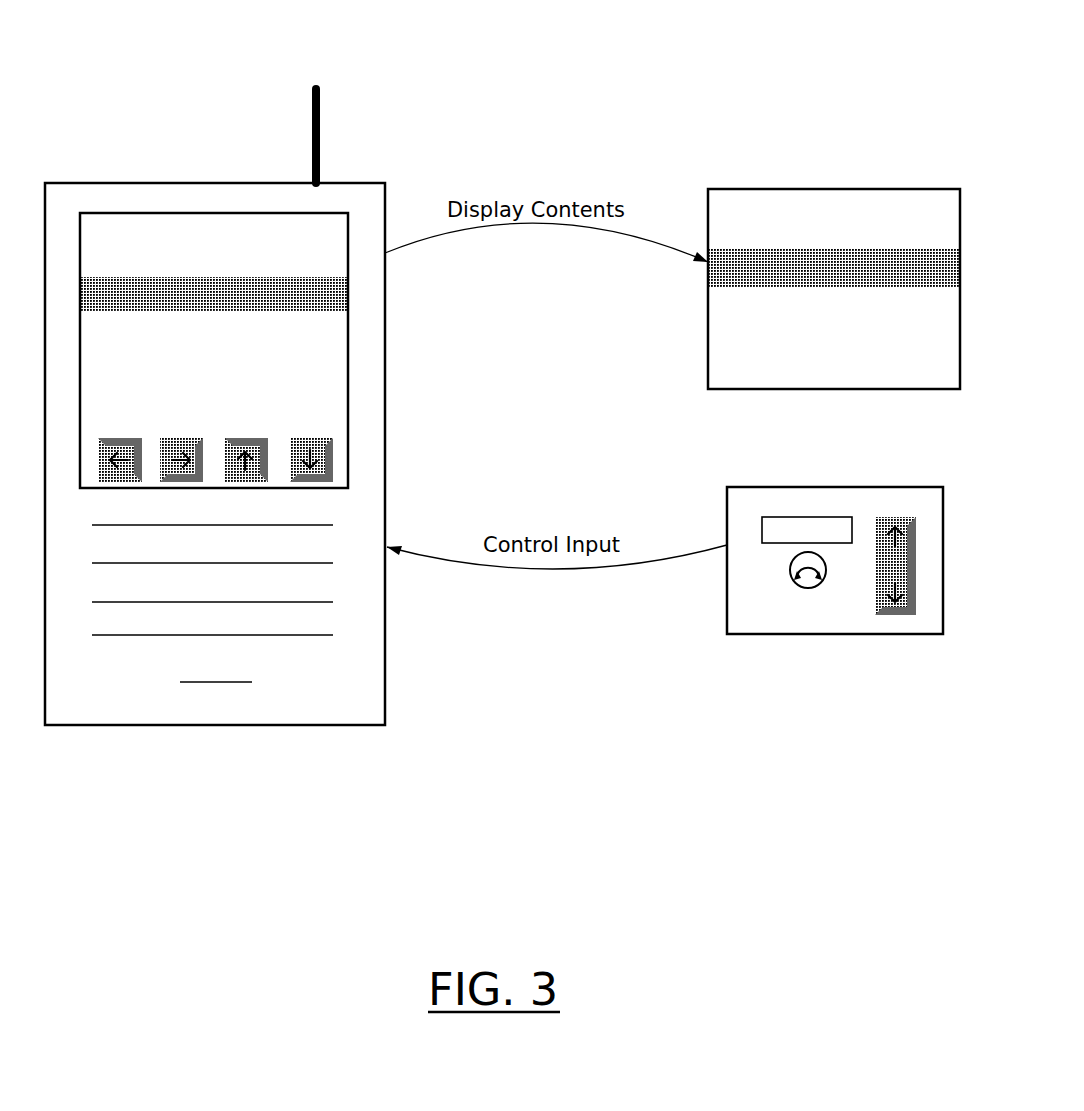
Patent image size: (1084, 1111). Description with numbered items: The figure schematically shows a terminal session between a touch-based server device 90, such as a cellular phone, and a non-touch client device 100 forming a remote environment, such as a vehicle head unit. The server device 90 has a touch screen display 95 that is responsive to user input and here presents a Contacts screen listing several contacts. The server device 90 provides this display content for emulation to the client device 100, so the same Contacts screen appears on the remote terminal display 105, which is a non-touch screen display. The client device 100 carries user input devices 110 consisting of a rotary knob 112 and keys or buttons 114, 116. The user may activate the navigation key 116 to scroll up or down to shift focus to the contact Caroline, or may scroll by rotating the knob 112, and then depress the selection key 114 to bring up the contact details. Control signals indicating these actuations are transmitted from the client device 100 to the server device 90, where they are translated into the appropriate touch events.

The server device 90 is at (200, 136).
The display 95 is at (278, 320).
The client device 100 is at (856, 114).
The remote terminal display 105 is at (834, 258).
The user input devices 110 is at (803, 557).
The rotary knob 112 is at (767, 621).
The selection key 114 is at (830, 499).
The navigation key 116 is at (861, 597).